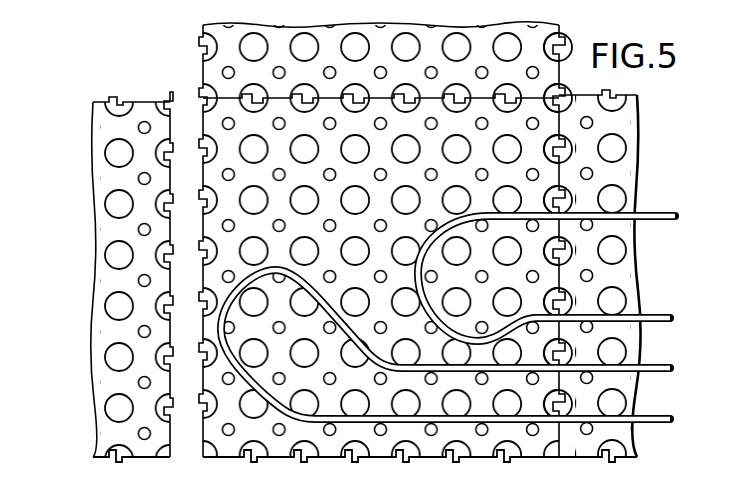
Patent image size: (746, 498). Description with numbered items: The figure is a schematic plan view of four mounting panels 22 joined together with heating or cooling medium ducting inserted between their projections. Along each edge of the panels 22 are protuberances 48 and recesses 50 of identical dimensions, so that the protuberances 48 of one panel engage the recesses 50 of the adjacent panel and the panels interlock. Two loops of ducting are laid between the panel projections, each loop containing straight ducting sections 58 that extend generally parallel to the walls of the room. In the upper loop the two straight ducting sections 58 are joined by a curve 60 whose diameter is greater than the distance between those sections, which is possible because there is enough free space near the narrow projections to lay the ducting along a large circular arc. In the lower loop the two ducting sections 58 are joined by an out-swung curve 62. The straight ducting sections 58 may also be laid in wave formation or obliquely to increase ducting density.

The mounting panel 22 is at (214, 66).
The protuberance 48 is at (174, 247).
The recess 50 is at (168, 208).
The straight ducting section 58 is at (655, 210).
The curve 60 is at (413, 250).
The out-swung curve 62 is at (243, 358).